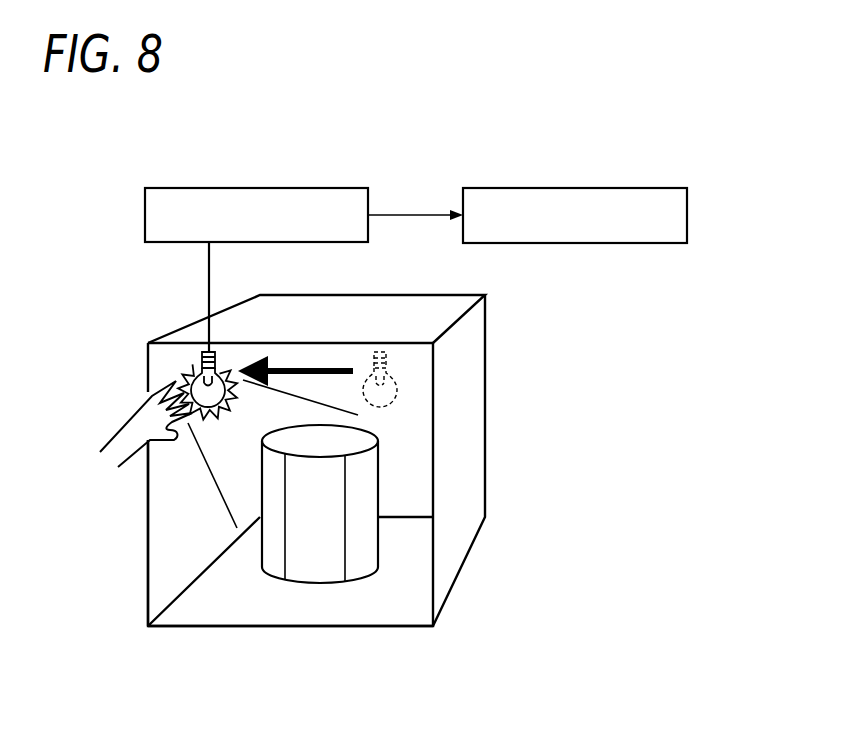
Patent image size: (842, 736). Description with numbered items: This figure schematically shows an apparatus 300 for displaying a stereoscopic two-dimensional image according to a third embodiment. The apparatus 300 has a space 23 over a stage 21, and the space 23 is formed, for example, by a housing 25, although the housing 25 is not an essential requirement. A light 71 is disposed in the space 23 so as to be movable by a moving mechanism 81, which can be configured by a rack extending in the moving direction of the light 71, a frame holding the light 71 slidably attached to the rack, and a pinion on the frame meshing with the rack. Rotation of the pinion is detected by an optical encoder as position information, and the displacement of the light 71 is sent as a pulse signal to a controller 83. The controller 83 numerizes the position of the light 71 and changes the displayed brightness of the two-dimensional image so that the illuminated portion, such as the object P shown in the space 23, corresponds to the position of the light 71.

The apparatus for displaying stereoscopic two-dimensional image 300 is at (468, 150).
The moving mechanism 81 is at (327, 188).
The controller 83 is at (656, 188).
The light 71 is at (190, 375).
The space 23 is at (418, 402).
The housing 25 is at (147, 535).
The stage 21 is at (203, 596).
The object to be illuminated P is at (380, 477).